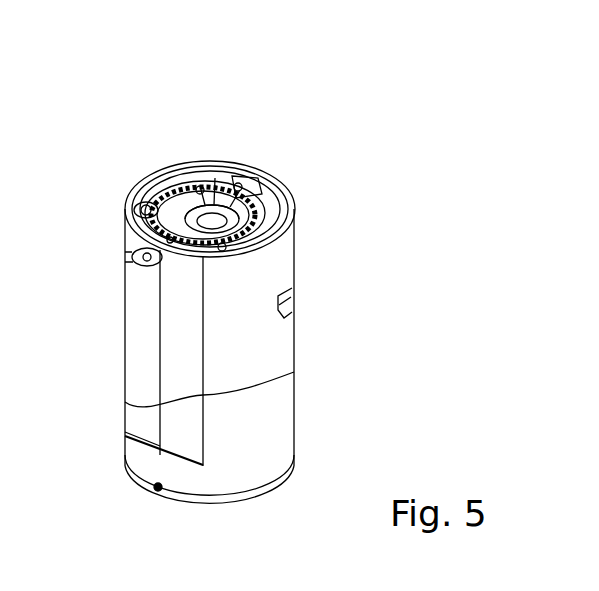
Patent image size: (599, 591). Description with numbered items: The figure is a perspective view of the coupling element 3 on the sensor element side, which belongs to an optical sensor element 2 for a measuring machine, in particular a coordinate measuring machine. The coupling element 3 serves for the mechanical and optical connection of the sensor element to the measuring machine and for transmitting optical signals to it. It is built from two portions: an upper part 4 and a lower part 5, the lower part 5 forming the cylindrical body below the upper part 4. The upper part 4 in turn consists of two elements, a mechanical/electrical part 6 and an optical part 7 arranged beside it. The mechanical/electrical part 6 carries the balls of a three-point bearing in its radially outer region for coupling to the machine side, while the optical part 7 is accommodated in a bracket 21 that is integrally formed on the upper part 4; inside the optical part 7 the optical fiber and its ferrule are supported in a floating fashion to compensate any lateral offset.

The optical sensor element 2 is at (335, 124).
The coupling element on the sensor element side 3 is at (300, 331).
The upper part 4 is at (295, 421).
The lower part 5 is at (294, 234).
The mechanical/electrical part 6 is at (172, 165).
The optical part 7 is at (124, 240).
The bracket 21 is at (123, 352).